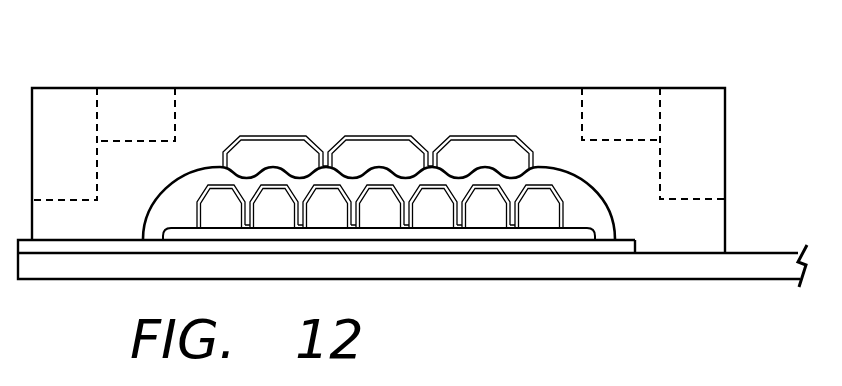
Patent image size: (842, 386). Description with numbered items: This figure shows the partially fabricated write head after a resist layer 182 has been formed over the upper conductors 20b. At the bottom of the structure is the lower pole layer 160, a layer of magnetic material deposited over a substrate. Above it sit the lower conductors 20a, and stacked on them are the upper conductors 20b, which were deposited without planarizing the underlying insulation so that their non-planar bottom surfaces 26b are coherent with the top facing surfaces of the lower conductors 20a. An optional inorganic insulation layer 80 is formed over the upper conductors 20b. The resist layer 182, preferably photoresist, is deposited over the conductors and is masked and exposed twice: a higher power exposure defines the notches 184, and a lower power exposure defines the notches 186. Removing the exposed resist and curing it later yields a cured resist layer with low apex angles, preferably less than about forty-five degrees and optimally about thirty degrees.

The resist layer 182 is at (218, 118).
The notches 184 is at (63, 118).
The notches 186 is at (133, 118).
The lower pole layer 160 is at (775, 261).
The lower conductors 20a is at (535, 208).
The upper conductors 20b is at (378, 100).
The non-planar bottom surfaces 26b is at (484, 172).
The inorganic insulation layer 80 is at (505, 137).